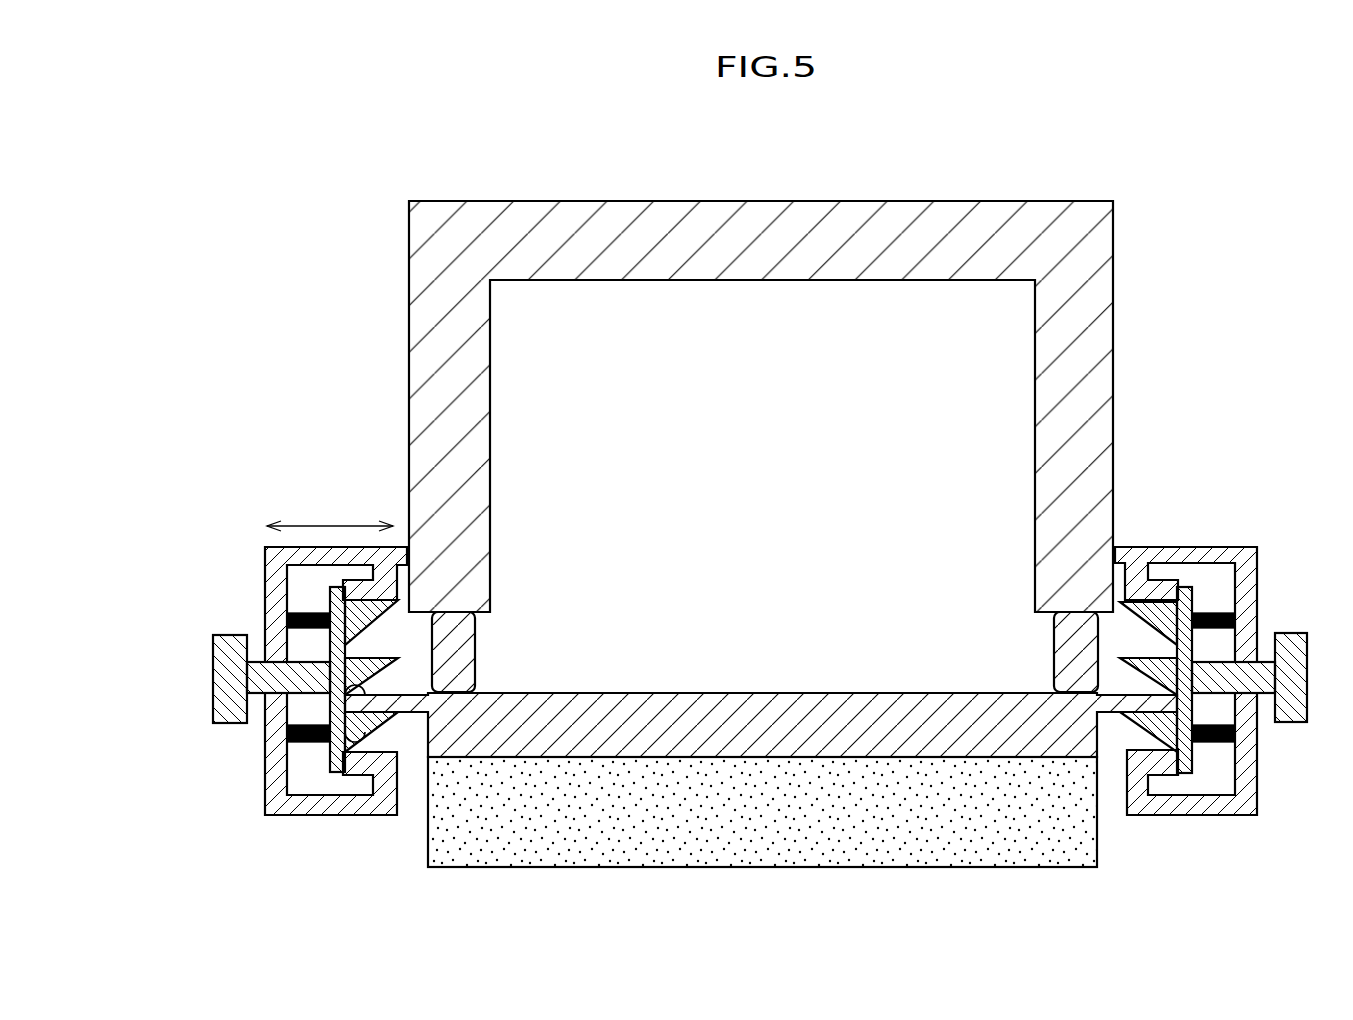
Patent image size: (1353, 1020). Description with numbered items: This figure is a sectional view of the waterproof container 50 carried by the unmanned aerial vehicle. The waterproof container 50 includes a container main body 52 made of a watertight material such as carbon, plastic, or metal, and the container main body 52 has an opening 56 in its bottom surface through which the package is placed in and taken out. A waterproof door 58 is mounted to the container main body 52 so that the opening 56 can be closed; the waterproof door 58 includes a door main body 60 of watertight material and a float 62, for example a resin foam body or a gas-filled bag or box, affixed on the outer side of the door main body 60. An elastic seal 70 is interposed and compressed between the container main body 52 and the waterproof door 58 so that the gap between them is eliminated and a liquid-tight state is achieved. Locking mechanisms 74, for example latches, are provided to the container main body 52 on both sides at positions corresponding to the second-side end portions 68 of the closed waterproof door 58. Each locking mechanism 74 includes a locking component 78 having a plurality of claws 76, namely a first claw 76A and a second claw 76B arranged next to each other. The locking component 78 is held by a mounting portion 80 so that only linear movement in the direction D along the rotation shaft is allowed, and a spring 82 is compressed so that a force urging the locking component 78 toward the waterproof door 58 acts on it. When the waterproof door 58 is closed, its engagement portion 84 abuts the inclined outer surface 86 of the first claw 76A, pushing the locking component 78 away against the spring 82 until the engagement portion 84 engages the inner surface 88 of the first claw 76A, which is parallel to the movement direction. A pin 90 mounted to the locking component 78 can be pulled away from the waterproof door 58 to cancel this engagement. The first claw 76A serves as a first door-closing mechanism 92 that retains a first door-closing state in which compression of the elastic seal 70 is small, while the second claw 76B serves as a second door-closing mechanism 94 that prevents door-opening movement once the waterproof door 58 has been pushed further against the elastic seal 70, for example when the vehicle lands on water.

The waterproof container 50 is at (995, 142).
The container main body 52 is at (912, 200).
The opening 56 is at (786, 466).
The waterproof door 58 is at (822, 877).
The door main body 60 is at (728, 745).
The float 62 is at (633, 857).
The second-side end portion 68 is at (676, 694).
The elastic seal 70 is at (471, 660).
The locking mechanism 74 is at (274, 512).
The claw 76 is at (747, 812).
The first claw 76A is at (747, 791).
The second claw 76B is at (761, 812).
The locking component 78 is at (330, 600).
The mounting portion 80 is at (265, 632).
The spring 82 is at (300, 620).
The engagement portion 84 is at (385, 708).
The inclined outer surface 86 is at (352, 762).
The inner surface 88 is at (345, 705).
The pin 90 is at (214, 676).
The first door-closing mechanism 92 is at (375, 663).
The second door-closing mechanism 94 is at (386, 700).